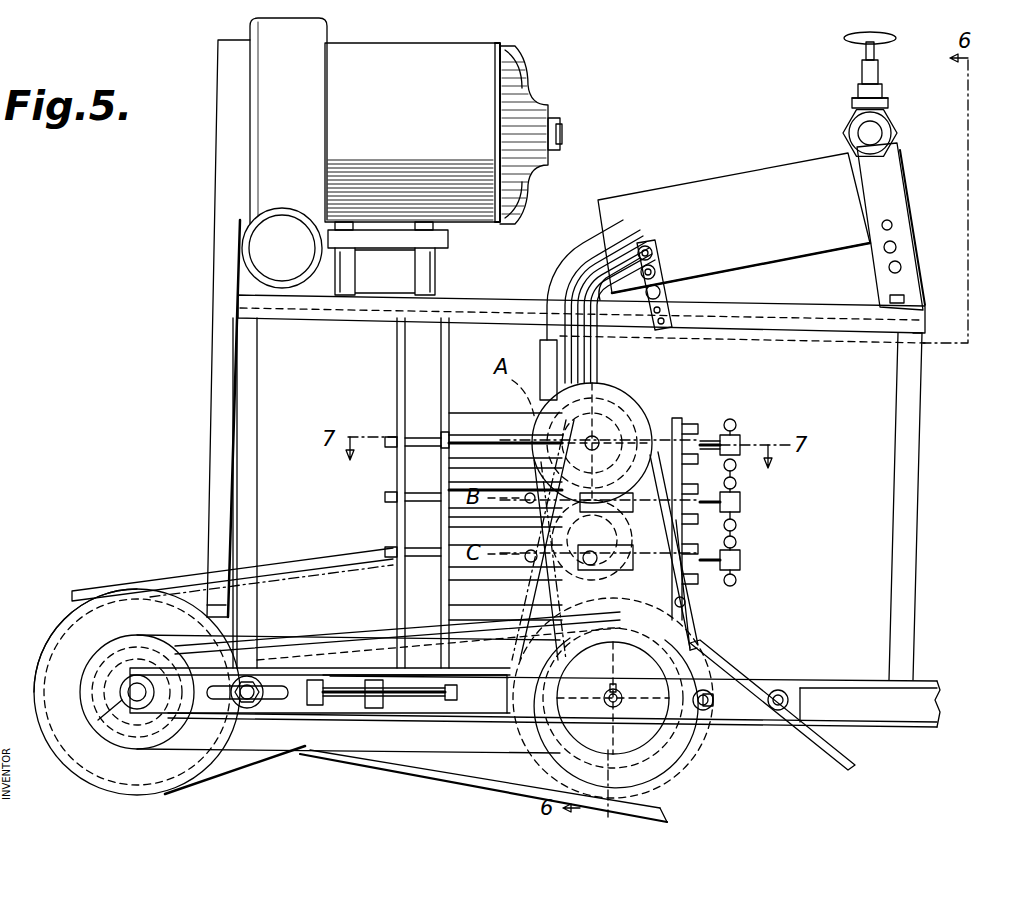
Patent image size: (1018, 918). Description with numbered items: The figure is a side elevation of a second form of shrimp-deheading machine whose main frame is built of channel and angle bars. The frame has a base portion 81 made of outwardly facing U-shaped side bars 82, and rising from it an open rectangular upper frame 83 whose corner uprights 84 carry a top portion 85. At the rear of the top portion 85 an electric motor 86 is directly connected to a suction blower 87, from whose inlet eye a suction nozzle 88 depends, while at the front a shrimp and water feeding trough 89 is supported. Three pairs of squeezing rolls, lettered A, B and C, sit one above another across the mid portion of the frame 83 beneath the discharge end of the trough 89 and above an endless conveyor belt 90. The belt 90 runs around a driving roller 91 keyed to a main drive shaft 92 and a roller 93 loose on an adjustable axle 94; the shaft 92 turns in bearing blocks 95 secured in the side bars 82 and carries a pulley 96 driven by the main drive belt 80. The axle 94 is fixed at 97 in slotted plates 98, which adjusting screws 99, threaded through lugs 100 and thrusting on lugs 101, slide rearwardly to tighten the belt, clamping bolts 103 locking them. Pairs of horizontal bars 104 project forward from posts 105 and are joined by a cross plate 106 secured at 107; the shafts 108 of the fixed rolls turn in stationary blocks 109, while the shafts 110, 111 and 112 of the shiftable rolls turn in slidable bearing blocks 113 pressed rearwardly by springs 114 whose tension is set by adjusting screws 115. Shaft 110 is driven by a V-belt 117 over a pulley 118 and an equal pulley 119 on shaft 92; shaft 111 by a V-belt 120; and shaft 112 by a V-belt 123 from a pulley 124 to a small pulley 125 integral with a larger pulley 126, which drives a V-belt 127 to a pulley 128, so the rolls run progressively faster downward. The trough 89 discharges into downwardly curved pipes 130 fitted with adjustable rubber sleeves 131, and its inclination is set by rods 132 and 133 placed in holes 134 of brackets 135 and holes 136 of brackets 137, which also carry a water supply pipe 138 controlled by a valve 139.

The main drive belt 80 is at (822, 752).
The base portion 81 is at (884, 727).
The side bars 82 is at (818, 682).
The upper frame 83 is at (930, 394).
The corner uprights 84 is at (262, 412).
The top portion 85 is at (796, 306).
The electric motor 86 is at (414, 134).
The suction blower 87 is at (258, 155).
The suction nozzle 88 is at (205, 370).
The feeding trough 89 is at (740, 188).
The endless conveyor belt 90 is at (350, 636).
The driving roller 91 is at (692, 656).
The main drive shaft 92 is at (613, 698).
The roller 93 is at (120, 600).
The shaft or axle 94 is at (98, 720).
The bearing blocks 95 is at (744, 714).
The pulley 96 is at (688, 735).
The fixing point 97 is at (118, 686).
The slotted plates 98 is at (293, 680).
The adjusting screws 99 is at (450, 684).
The lugs 100 is at (374, 680).
The lugs 101 is at (314, 682).
The clamping bolts 103 is at (244, 706).
The horizontal bars 104 is at (442, 440).
The posts 105 is at (398, 342).
The plate 106 is at (680, 418).
The securing means 107 is at (730, 419).
The shafts 108 is at (528, 438).
The stationary blocks 109 is at (465, 426).
The slow speed roll shaft 110 is at (600, 435).
The shiftable roll shaft 111 is at (675, 487).
The roll shaft 112 is at (604, 580).
The bearing blocks 113 is at (608, 558).
The leaf or bar springs 114 is at (684, 603).
The adjusting screws 115 is at (736, 468).
The V-belt 117 is at (688, 640).
The pulley 118 is at (592, 383).
The pulley 119 is at (614, 722).
The V-belt 120 is at (686, 626).
The V-belt 123 is at (402, 770).
The pulley 124 is at (690, 770).
The small pulley 125 is at (122, 640).
The larger pulley 126 is at (46, 632).
The V-belt 127 is at (300, 566).
The pulley 128 is at (738, 512).
The downwardly curved pipes 130 is at (552, 278).
The rubber sleeves 131 is at (548, 348).
The adjustable rod 132 is at (662, 296).
The adjustable rod 133 is at (884, 247).
The holes 134 is at (652, 270).
The upright brackets 135 is at (640, 253).
The holes 136 is at (898, 262).
The brackets 137 is at (894, 176).
The water supply pipe 138 is at (851, 133).
The valve 139 is at (890, 118).